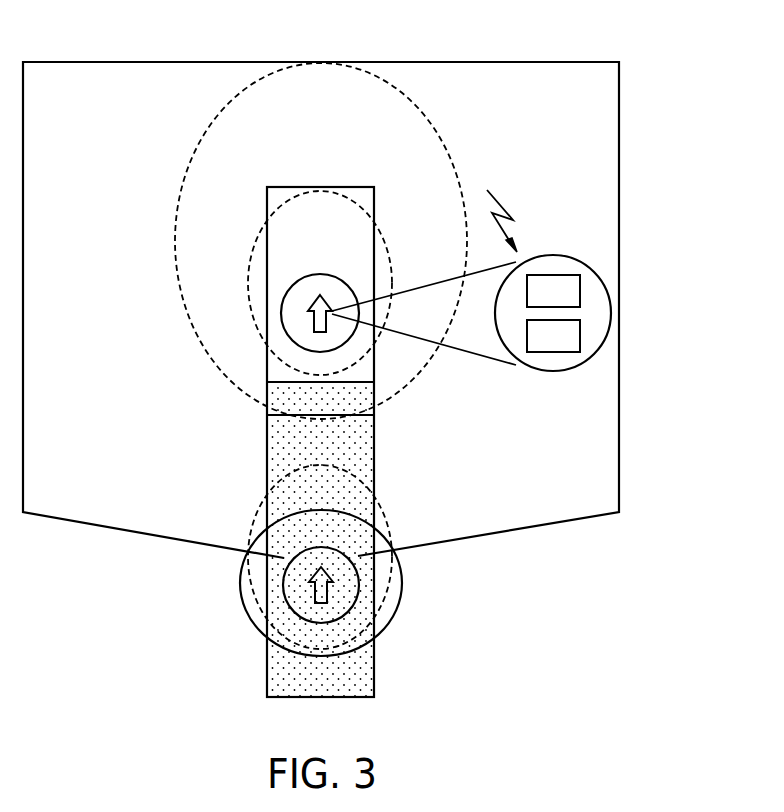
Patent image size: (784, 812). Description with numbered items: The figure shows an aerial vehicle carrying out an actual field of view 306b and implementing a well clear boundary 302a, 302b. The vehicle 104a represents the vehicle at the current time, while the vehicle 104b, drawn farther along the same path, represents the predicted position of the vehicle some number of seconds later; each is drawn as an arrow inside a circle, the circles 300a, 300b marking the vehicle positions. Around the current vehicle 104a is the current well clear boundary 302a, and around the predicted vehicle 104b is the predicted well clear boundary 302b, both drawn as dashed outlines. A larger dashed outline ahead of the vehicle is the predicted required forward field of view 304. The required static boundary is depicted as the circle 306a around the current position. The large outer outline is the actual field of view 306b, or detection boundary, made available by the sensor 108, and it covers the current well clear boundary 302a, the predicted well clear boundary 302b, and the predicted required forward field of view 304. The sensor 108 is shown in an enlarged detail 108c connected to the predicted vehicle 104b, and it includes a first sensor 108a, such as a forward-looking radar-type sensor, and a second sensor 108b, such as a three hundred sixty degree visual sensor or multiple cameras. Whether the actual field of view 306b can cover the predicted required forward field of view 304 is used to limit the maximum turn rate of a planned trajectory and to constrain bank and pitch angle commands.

The actual field of view 306b is at (567, 62).
The required static boundary 306a is at (390, 627).
The predicted required forward field of view 304 is at (175, 228).
The predicted well clear boundary 302b is at (387, 236).
The current well clear boundary 302a is at (384, 515).
The second sensor 300b is at (320, 295).
The first sensor 300a is at (284, 590).
The vehicle 104b is at (292, 287).
The vehicle 104a is at (360, 585).
The sensor 108 is at (488, 208).
The sensor assembly detail 108c is at (551, 256).
The second sensor 108b is at (580, 292).
The first sensor 108a is at (580, 337).